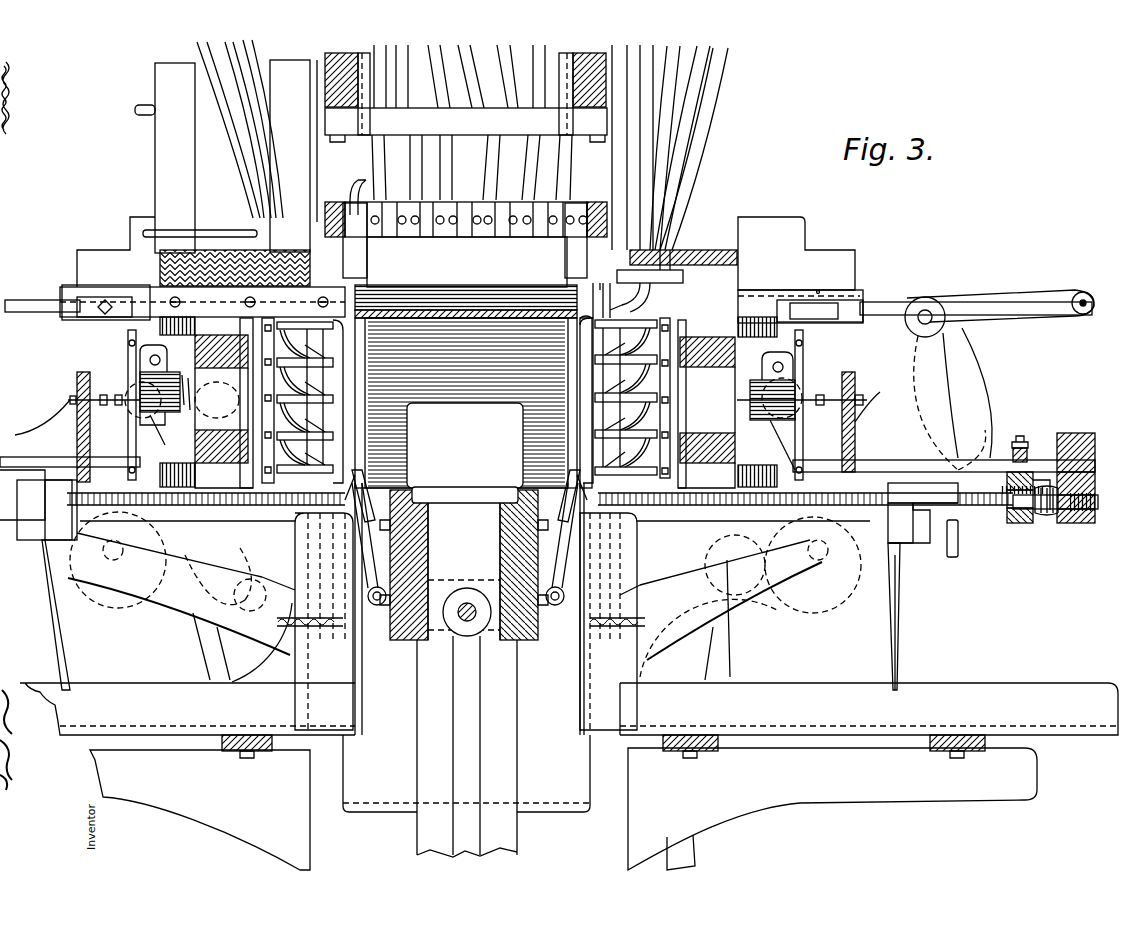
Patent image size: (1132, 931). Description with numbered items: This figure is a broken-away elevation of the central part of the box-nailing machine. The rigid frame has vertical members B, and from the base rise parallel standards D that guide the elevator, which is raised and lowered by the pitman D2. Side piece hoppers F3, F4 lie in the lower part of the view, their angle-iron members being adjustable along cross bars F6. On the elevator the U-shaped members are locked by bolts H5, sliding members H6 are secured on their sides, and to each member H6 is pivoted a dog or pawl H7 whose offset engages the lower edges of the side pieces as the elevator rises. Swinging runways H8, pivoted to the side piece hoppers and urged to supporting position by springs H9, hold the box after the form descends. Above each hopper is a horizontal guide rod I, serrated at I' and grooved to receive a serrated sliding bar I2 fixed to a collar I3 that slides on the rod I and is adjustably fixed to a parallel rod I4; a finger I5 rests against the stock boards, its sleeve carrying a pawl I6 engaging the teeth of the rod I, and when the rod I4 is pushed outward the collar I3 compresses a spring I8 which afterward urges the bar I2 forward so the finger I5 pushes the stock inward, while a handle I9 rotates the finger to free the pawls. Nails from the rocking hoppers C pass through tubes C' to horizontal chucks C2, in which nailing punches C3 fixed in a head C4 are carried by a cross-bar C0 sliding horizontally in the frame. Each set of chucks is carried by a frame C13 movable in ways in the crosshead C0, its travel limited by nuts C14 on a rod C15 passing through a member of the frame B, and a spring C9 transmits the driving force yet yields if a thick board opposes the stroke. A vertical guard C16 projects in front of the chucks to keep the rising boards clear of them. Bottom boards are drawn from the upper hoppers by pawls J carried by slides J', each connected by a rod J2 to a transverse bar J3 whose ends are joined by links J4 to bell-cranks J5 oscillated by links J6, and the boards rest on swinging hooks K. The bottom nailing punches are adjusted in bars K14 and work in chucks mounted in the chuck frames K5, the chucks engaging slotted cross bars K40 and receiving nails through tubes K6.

The nail chutes C' is at (441, 146).
The slides J' is at (461, 290).
The pawls J is at (462, 269).
The rod J2 is at (28, 300).
The transverse bar J3 is at (1078, 315).
The links J4 is at (1003, 318).
The bell-cranks J5 is at (948, 383).
The links J6 is at (205, 636).
The nail tubes K6 is at (600, 70).
The punch bars K14 is at (466, 125).
The slotted cross bars K40 is at (468, 205).
The chuck frames K5 is at (600, 208).
The swinging hooks K is at (468, 300).
The vertical guard C16 is at (585, 383).
The horizontal chucks C2 is at (590, 402).
The rocking nail hoppers C is at (560, 402).
The cross-bar C0 is at (208, 460).
The head C4 is at (258, 403).
The nailing punches C3 is at (676, 402).
The chuck frame C13 is at (128, 340).
The spring C9 is at (165, 389).
The nuts C14 is at (812, 375).
The rod C15 is at (68, 400).
The vertical frame members B is at (77, 437).
The guide rod I is at (1049, 517).
The spring I8 is at (1046, 509).
The serrated side I' is at (1004, 504).
The serrated sliding bar I2 is at (1012, 525).
The collar I3 is at (1008, 525).
The sliding rod I4 is at (1040, 460).
The pawl I6 is at (900, 512).
The handle I9 is at (955, 557).
The finger I5 is at (900, 625).
The bolts H5 is at (532, 520).
The dog or pawl H7 is at (367, 587).
The sliding members H6 is at (380, 605).
The swinging runways H8 is at (300, 552).
The springs H9 is at (275, 620).
The pitman D2 is at (480, 720).
The standards D is at (520, 785).
The side piece hopper F4 is at (187, 709).
The side piece hopper F3 is at (869, 709).
The cross bars F6 is at (225, 750).